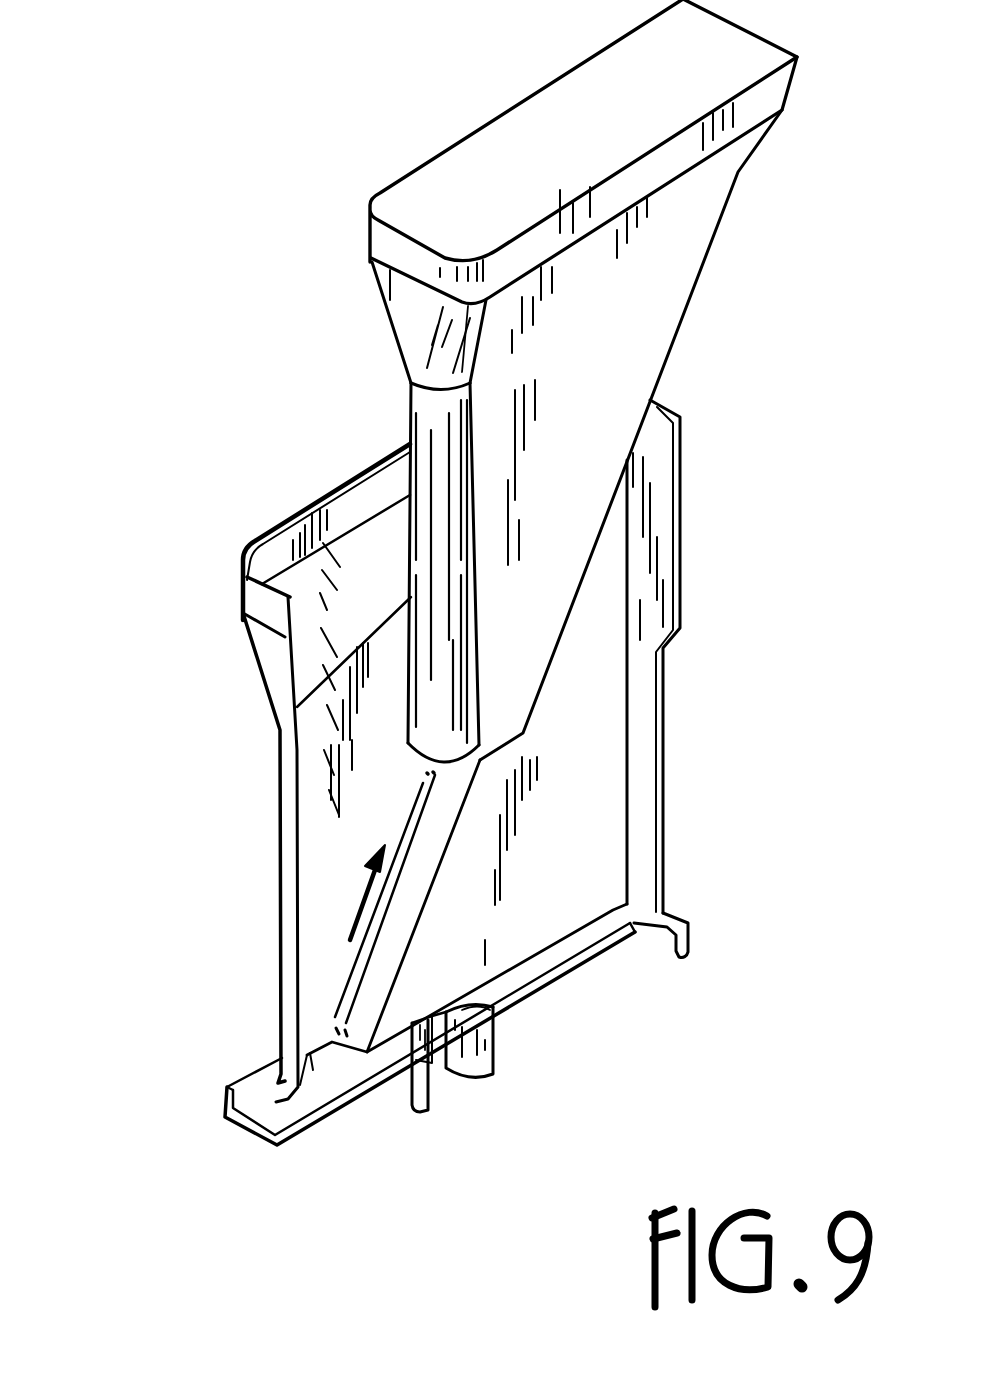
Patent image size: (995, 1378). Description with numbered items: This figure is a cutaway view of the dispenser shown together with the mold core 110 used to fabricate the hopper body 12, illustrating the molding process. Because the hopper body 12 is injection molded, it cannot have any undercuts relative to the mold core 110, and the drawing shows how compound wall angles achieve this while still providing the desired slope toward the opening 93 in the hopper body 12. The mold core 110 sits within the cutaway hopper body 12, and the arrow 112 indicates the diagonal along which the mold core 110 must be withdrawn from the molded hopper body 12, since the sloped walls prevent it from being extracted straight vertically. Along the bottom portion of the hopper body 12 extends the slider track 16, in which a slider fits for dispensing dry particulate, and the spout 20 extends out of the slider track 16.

The mold core 110 is at (688, 257).
The hopper body 12 is at (278, 903).
The arrow 112 is at (357, 893).
The opening 93 is at (311, 1066).
The slider track 16 is at (222, 1087).
The spout 20 is at (410, 1098).